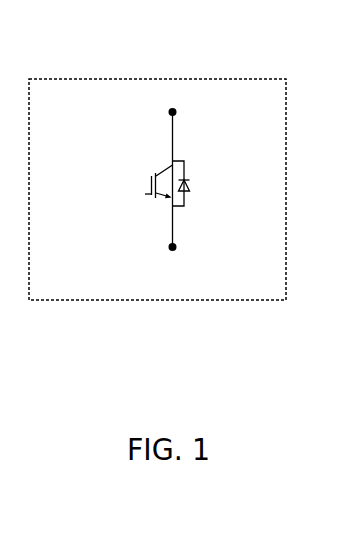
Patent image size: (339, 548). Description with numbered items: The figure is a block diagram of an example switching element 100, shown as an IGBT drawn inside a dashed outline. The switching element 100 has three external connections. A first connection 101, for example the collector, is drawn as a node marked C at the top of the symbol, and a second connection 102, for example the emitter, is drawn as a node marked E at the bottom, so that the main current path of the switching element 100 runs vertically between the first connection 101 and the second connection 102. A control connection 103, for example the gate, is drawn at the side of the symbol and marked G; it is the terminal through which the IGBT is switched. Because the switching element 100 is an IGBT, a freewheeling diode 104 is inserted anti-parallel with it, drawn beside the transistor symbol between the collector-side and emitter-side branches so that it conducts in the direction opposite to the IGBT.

The switching element 100 is at (172, 78).
The first connection 101 is at (177, 112).
The second connection 102 is at (176, 245).
The control connection 103 is at (132, 183).
The freewheeling diode 104 is at (192, 184).